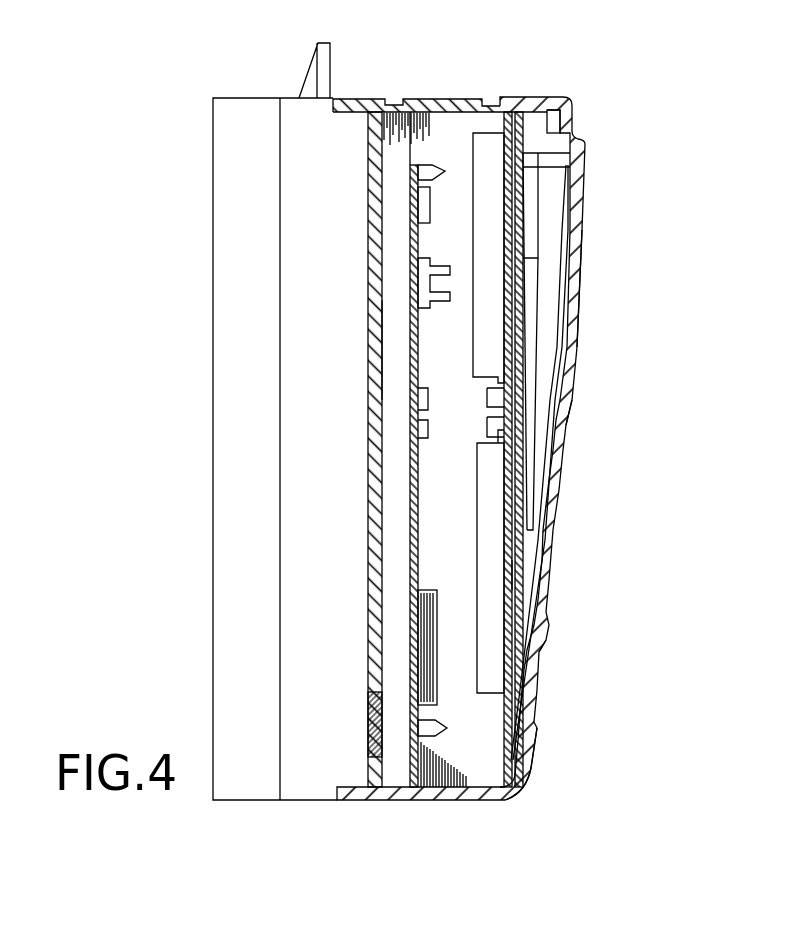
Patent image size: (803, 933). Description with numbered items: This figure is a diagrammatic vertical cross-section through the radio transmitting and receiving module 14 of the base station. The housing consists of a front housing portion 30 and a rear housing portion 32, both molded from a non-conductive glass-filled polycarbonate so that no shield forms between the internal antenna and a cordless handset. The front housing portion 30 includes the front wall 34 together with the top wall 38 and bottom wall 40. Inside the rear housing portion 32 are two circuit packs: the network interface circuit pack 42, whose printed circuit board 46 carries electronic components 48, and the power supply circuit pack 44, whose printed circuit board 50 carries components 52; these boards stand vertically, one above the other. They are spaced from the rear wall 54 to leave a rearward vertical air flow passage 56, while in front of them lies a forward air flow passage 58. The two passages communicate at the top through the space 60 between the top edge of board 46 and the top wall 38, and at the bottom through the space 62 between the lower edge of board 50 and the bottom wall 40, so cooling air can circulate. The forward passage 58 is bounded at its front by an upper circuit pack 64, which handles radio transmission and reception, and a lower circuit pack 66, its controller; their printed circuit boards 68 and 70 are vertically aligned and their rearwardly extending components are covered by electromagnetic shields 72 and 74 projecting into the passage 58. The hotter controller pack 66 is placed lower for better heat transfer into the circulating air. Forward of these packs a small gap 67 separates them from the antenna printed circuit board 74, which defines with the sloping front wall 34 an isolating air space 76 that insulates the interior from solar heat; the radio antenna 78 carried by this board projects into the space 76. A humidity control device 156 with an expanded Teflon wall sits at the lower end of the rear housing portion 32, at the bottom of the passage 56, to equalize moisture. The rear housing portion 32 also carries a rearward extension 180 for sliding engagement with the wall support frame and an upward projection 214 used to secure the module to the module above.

The radio transmitting and receiving module 14 is at (575, 410).
The front housing portion 30 is at (580, 342).
The rear housing portion 32 is at (210, 236).
The front wall 34 is at (582, 258).
The top wall 38 is at (447, 98).
The bottom wall 40 is at (438, 793).
The circuit pack 42 is at (403, 278).
The circuit pack 44 is at (428, 505).
The printed circuit board 46 is at (417, 203).
The electronic components 48 is at (405, 186).
The printed circuit board 50 is at (410, 460).
The components 52 is at (440, 598).
The rear wall 54 is at (367, 137).
The rearward vertical air flow passage 56 is at (388, 338).
The forward air flow passage 58 is at (460, 366).
The space 60 is at (425, 98).
The space 62 is at (460, 752).
The upper circuit pack 64 is at (462, 132).
The lower circuit pack 66 is at (542, 647).
The small gap 67 is at (513, 294).
The printed circuit board 68 is at (517, 151).
The printed circuit board 70 is at (505, 572).
The electromagnetic shield 72 is at (535, 107).
The electromagnetic shield / antenna printed circuit board 74 is at (521, 165).
The isolating air space 76 is at (550, 181).
The radio antenna 78 is at (530, 209).
The humidity control device 156 is at (377, 725).
The rearward extensions 180 is at (227, 462).
The upward projections 214 is at (313, 57).